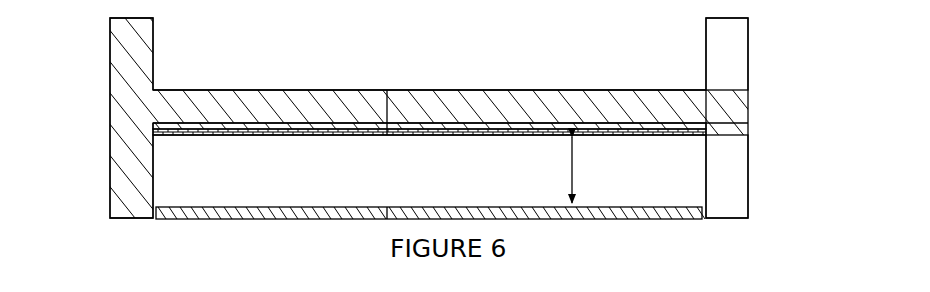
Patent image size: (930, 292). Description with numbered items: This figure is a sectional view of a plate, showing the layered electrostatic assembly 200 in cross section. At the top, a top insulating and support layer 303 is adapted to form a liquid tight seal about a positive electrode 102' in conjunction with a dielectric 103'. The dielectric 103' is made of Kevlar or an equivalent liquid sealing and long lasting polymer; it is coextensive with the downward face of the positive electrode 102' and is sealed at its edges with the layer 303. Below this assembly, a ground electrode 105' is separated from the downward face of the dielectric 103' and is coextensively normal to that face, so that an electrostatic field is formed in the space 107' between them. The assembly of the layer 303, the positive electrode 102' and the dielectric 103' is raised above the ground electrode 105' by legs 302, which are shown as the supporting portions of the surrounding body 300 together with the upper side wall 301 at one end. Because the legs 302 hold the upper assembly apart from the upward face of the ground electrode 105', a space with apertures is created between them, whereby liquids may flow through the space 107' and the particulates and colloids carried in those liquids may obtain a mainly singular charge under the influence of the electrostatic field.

The microfluidic device assembly 200 is at (455, 109).
The housing base 300 is at (116, 124).
The upper side wall 301 is at (750, 56).
The legs 302 is at (758, 178).
The top insulating and support layer 303 is at (608, 83).
The positive electrode 102' is at (429, 156).
The dielectric 103' is at (429, 162).
The ground electrode 105' is at (430, 183).
The space 107' is at (600, 170).